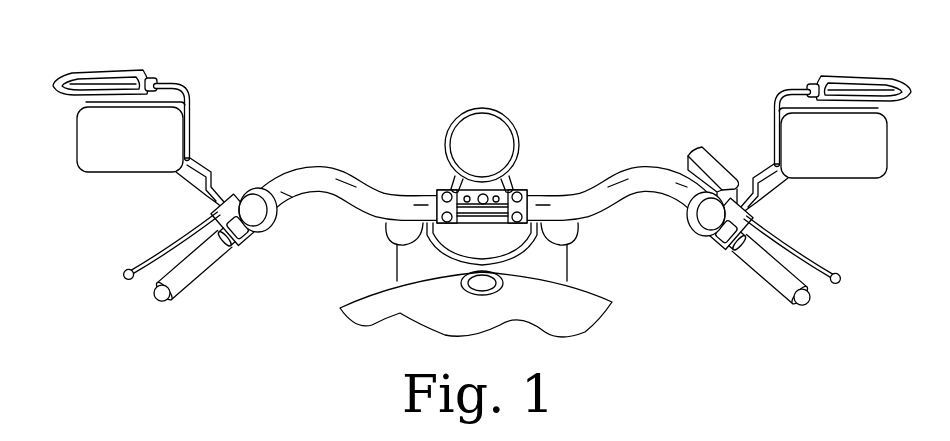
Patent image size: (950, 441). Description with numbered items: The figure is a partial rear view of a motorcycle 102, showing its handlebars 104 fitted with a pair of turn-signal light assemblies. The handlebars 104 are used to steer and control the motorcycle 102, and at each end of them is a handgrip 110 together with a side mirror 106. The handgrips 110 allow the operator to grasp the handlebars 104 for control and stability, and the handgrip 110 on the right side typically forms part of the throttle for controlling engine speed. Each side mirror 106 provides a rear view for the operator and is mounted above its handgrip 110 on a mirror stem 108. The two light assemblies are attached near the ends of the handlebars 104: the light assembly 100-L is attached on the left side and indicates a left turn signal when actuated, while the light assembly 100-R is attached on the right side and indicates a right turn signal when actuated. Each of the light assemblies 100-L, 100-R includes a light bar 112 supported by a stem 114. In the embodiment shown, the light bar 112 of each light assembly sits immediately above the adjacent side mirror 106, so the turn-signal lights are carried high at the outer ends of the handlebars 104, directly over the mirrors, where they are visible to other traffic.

The left light assembly 100-L is at (249, 67).
The right light assembly 100-R is at (784, 63).
The motorcycle 102 is at (475, 86).
The handlebars 104 is at (612, 180).
The side mirror 106 is at (105, 172).
The mirror stem 108 is at (205, 160).
The handgrip 110 is at (200, 283).
The light bar 112 is at (120, 70).
The stem 114 is at (177, 80).